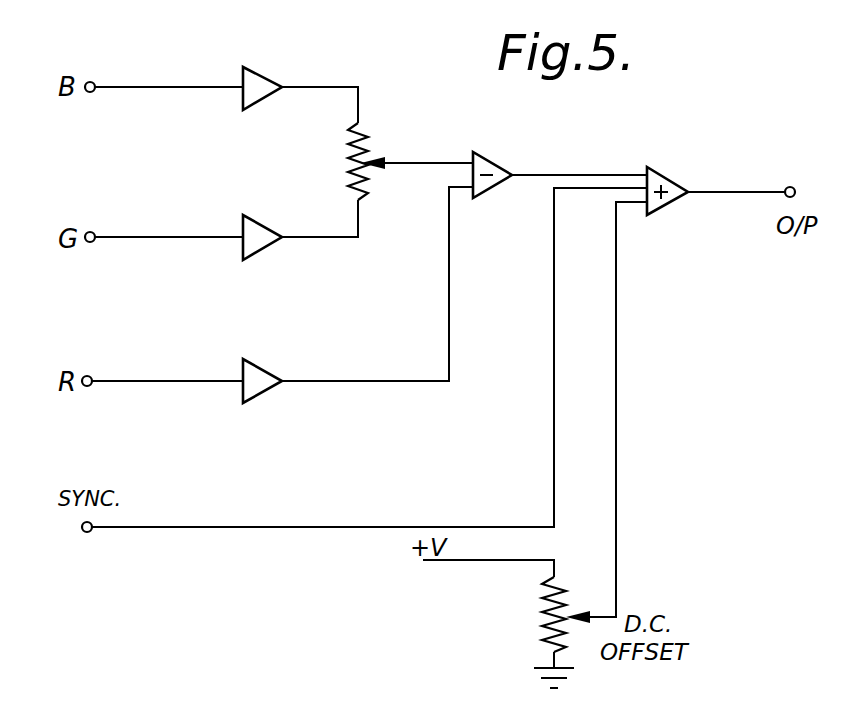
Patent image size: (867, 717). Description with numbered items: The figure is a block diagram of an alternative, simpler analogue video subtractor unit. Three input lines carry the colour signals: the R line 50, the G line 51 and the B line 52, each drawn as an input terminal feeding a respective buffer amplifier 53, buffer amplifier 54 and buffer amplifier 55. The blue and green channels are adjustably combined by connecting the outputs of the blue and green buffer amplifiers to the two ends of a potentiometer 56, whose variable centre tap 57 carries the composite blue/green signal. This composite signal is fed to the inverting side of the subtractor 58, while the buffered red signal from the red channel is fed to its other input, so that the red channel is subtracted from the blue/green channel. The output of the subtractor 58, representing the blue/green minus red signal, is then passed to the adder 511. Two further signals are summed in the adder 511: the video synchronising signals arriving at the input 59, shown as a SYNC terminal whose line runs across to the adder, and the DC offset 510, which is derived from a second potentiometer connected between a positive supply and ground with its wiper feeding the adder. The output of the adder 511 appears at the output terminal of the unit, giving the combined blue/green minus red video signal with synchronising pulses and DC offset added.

The R line 50 is at (140, 380).
The G line 51 is at (154, 236).
The B line 52 is at (163, 58).
The buffer amplifier 53 is at (268, 376).
The buffer amplifier 54 is at (263, 232).
The buffer amplifier 55 is at (265, 78).
The potentiometer 56 is at (372, 128).
The variable centre tap 57 is at (388, 168).
The subtractor 58 is at (495, 160).
The input 59 is at (92, 532).
The DC offset 510 is at (572, 612).
The adder 511 is at (672, 185).